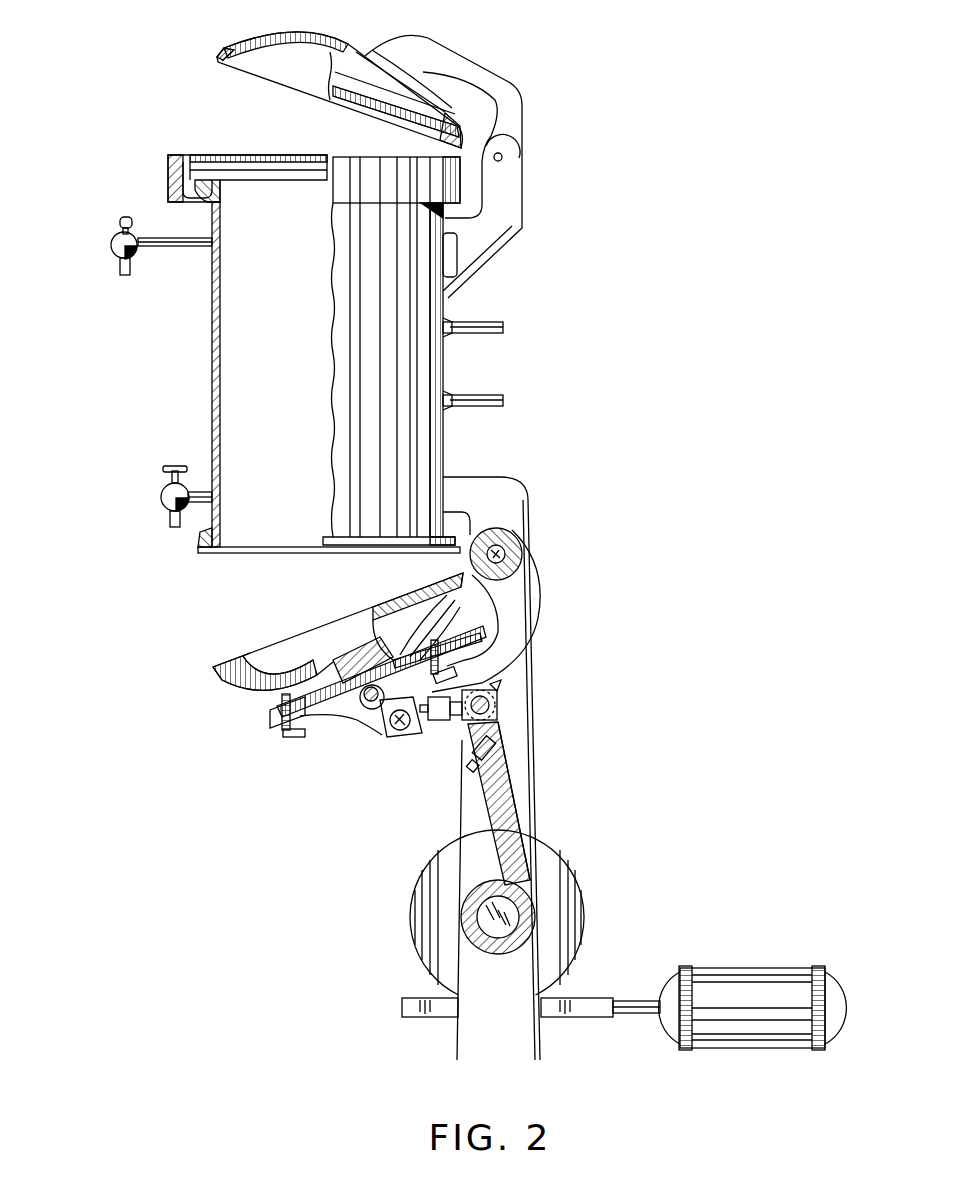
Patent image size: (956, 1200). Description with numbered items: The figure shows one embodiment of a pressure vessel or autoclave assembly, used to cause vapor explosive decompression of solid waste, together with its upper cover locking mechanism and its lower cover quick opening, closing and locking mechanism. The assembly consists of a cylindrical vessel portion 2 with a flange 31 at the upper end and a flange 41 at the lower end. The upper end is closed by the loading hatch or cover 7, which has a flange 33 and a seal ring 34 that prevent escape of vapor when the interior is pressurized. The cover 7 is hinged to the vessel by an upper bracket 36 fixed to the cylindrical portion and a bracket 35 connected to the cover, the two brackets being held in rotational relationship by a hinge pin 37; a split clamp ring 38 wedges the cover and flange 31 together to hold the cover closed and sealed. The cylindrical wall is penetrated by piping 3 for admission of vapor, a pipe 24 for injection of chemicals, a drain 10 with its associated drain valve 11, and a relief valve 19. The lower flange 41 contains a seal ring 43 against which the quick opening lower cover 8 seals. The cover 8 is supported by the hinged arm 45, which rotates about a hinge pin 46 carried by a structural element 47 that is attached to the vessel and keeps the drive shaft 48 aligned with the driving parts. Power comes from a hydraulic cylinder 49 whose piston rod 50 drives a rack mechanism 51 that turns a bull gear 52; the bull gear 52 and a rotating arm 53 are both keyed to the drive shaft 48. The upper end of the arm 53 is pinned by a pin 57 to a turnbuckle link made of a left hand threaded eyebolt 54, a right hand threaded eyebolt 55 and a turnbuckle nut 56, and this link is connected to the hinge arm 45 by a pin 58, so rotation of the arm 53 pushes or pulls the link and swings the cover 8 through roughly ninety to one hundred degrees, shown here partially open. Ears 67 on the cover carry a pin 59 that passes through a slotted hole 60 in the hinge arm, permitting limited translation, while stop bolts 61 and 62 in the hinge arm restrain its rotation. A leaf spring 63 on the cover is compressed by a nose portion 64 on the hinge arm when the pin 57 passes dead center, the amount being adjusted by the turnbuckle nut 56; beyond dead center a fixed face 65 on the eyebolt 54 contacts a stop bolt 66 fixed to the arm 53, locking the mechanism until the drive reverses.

The cylindrical vessel portion 2 is at (212, 292).
The piping 3 is at (487, 397).
The loading hatch or cover 7 is at (283, 42).
The lower cover 8 is at (217, 672).
The drain 10 is at (211, 488).
The drain valve 11 is at (160, 489).
The relief valve 19 is at (111, 247).
The pipe 24 is at (483, 325).
The flange 31 is at (203, 203).
The flange 33 is at (217, 52).
The seal ring 34 is at (237, 61).
The bracket 35 is at (525, 96).
The upper bracket 36 is at (513, 197).
The hinge pin 37 is at (507, 158).
The split clamp ring 38 is at (168, 180).
The flange 41 is at (197, 548).
The seal ring 43 is at (208, 554).
The hinged arm 45 is at (533, 613).
The hinge pin 46 is at (523, 553).
The structural element 47 is at (513, 503).
The drive shaft 48 is at (513, 915).
The hydraulic cylinder 49 is at (745, 1042).
The piston rod 50 is at (638, 1019).
The rack mechanism 51 is at (593, 1019).
The bull gear 52 is at (584, 954).
The rotating arm 53 is at (527, 878).
The left hand threaded eyebolt 54 is at (500, 718).
The right hand threaded eyebolt 55 is at (397, 735).
The turnbuckle nut 56 is at (438, 723).
The pin 57 is at (497, 708).
The pin 58 is at (403, 733).
The pin 59 is at (363, 702).
The slotted hole 60 is at (370, 710).
The stop bolt 61 is at (287, 737).
The stop bolt 62 is at (453, 673).
The leaf spring 63 is at (340, 643).
The nose portion 64 is at (355, 658).
The fixed face 65 is at (502, 688).
The stop bolt 66 is at (468, 757).
The ears 67 is at (330, 675).